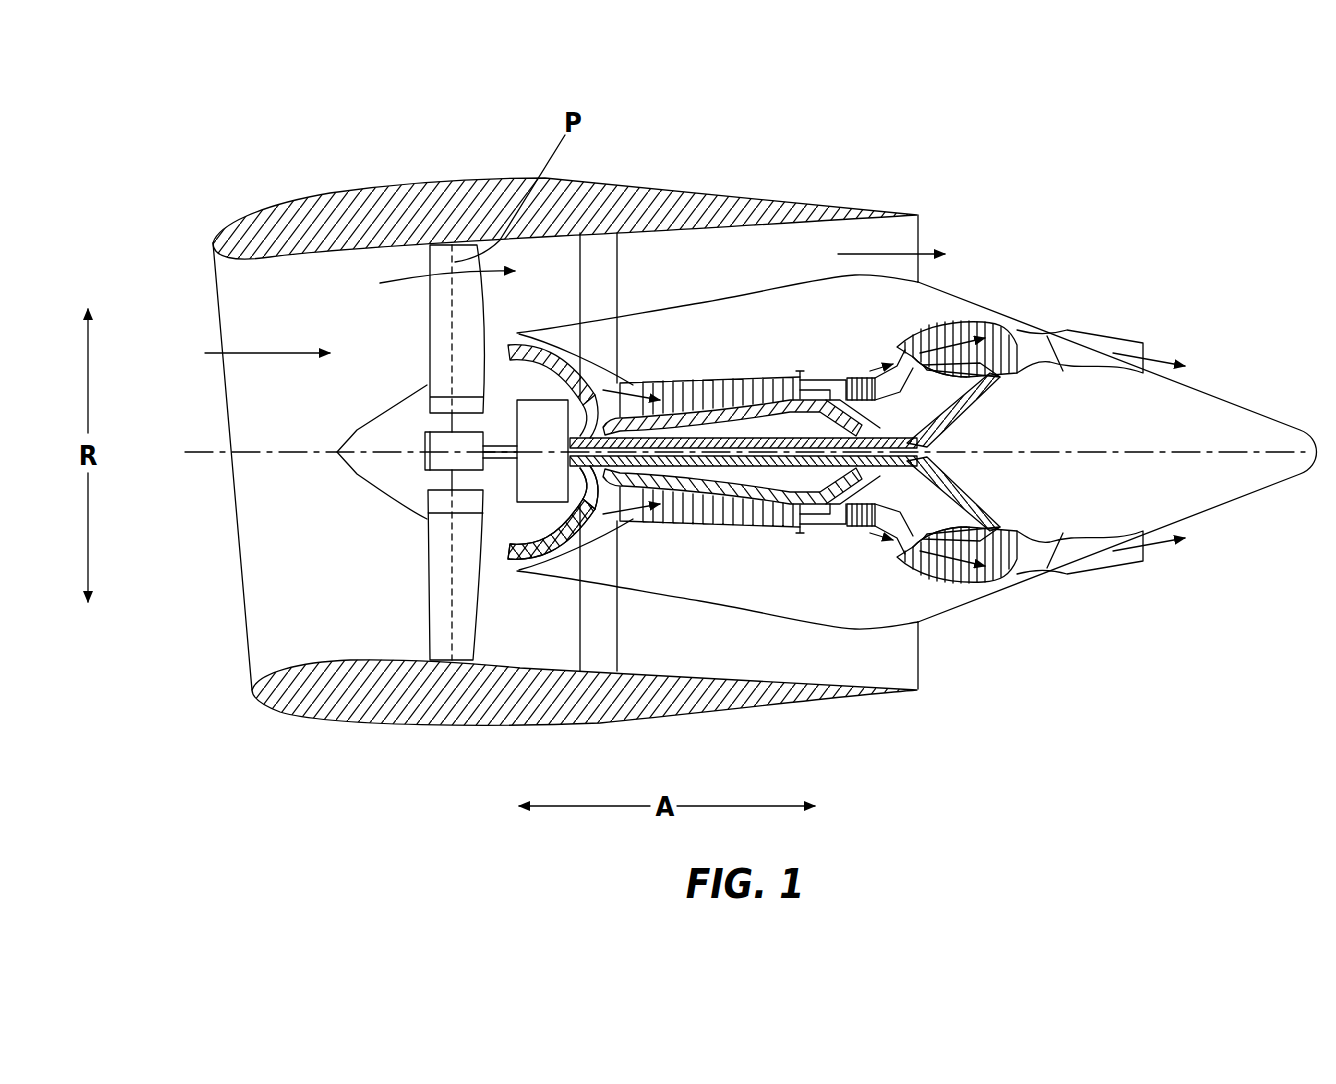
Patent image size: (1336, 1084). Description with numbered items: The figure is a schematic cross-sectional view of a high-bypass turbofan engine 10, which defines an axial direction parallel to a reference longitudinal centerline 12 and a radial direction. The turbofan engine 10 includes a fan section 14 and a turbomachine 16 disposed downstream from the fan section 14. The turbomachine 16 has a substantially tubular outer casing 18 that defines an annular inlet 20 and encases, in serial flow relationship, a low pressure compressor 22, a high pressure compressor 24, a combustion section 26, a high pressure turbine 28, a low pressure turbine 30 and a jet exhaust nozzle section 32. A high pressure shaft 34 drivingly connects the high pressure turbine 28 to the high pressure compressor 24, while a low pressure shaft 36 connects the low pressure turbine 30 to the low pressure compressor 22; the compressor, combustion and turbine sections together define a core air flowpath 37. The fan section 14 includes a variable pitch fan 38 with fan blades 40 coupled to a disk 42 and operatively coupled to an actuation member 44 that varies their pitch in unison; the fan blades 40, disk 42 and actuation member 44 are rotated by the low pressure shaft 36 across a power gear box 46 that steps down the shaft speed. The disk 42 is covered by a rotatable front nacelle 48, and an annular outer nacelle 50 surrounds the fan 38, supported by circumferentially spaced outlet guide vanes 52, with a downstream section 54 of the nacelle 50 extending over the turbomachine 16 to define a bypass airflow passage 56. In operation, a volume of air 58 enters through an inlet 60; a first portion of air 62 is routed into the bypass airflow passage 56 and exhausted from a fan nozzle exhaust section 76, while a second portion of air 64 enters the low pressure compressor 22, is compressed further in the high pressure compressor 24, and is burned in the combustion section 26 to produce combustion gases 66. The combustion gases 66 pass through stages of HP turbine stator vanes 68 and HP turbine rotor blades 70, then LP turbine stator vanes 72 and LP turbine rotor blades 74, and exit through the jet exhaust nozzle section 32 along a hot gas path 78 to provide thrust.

The turbofan engine 10 is at (1059, 195).
The longitudinal centerline 12 is at (1257, 450).
The fan section 14 is at (470, 147).
The turbomachine 16 is at (790, 343).
The outer casing 18 is at (777, 613).
The annular inlet 20 is at (524, 557).
The low pressure compressor 22 is at (580, 523).
The high pressure compressor 24 is at (647, 505).
The combustion section 26 is at (818, 522).
The high pressure turbine 28 is at (885, 529).
The low pressure turbine 30 is at (1003, 582).
The jet exhaust nozzle section 32 is at (1063, 565).
The high pressure shaft 34 is at (850, 407).
The low pressure shaft 36 is at (900, 427).
The core air flowpath 37 is at (604, 518).
The variable pitch fan 38 is at (383, 607).
The fan blades 40 is at (426, 603).
The disk 42 is at (430, 406).
The actuation member 44 is at (422, 433).
The power gear box 46 is at (554, 428).
The front nacelle 48 is at (345, 470).
The outer nacelle 50 is at (478, 722).
The outlet guide vanes 52 is at (618, 263).
The downstream section 54 is at (827, 210).
The bypass airflow passage 56 is at (663, 316).
The volume of air 58 is at (267, 353).
The inlet 60 is at (247, 670).
The first portion of air 62 is at (468, 252).
The second portion of air 64 is at (510, 340).
The combustion gases 66 is at (960, 330).
The HP turbine stator vanes 68 is at (843, 520).
The HP turbine rotor blades 70 is at (850, 497).
The LP turbine stator vanes 72 is at (943, 567).
The LP turbine rotor blades 74 is at (937, 565).
The fan nozzle exhaust section 76 is at (907, 240).
The hot gas path 78 is at (912, 348).